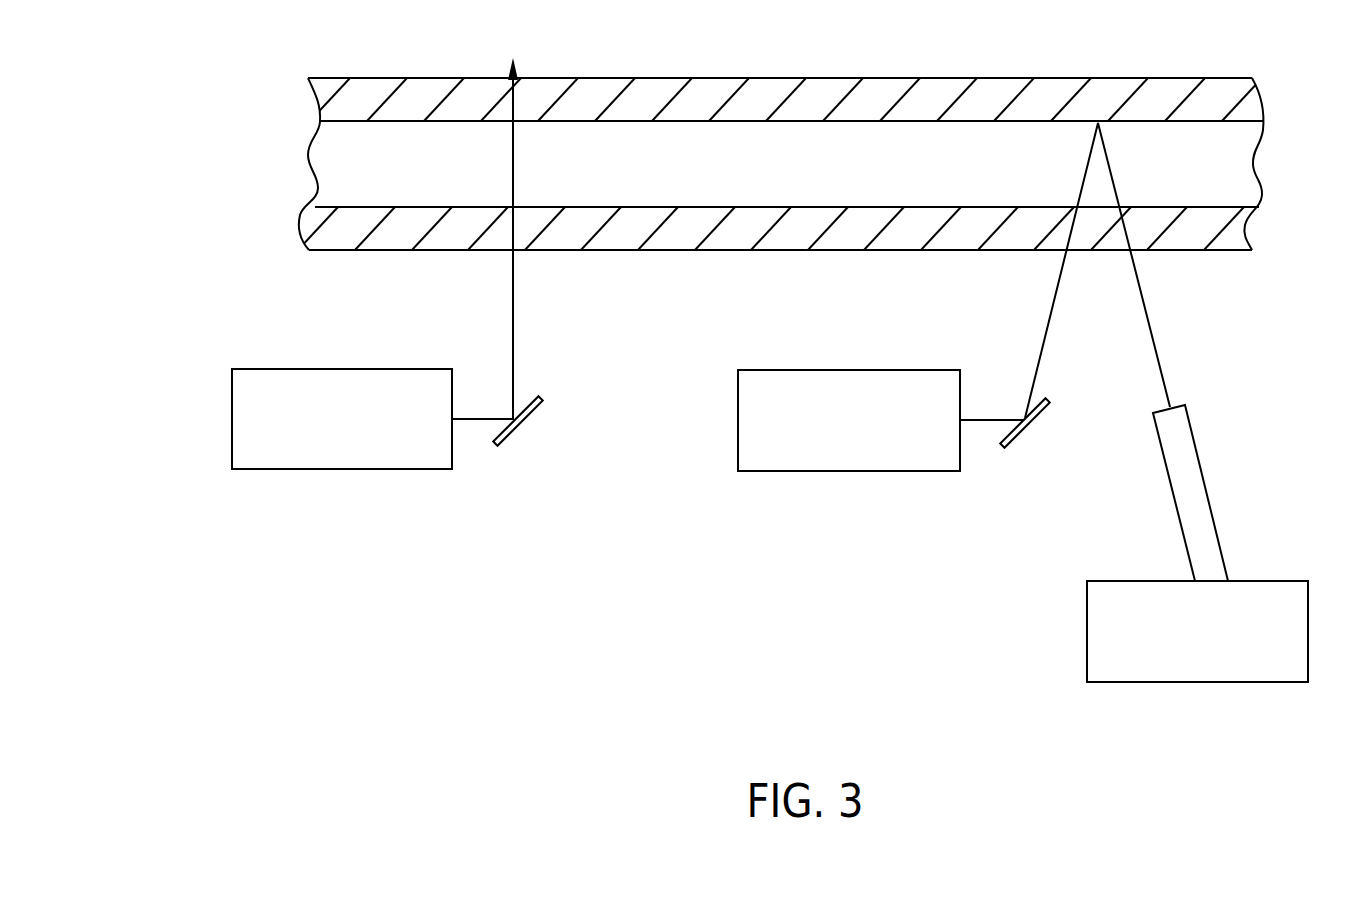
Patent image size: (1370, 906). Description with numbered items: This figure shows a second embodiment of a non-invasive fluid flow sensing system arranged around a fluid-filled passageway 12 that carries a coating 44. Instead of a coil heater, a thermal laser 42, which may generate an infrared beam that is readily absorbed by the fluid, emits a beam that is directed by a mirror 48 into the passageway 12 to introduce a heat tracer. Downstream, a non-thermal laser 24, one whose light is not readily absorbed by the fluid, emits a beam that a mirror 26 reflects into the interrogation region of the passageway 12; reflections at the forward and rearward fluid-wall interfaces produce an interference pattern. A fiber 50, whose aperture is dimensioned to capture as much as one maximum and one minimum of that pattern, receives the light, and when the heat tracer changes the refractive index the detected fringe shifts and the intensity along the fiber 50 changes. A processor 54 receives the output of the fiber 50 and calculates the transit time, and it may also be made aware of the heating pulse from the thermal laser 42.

The fluid-filled passageway 12 is at (855, 142).
The coating 44 is at (713, 83).
The thermal laser 42 is at (257, 463).
The mirror 48 is at (500, 447).
The non-thermal laser 24 is at (758, 463).
The mirror 26 is at (1007, 448).
The fiber 50 is at (1185, 445).
The processor 54 is at (1308, 605).